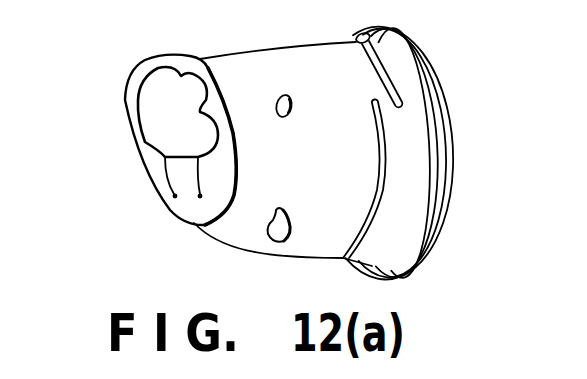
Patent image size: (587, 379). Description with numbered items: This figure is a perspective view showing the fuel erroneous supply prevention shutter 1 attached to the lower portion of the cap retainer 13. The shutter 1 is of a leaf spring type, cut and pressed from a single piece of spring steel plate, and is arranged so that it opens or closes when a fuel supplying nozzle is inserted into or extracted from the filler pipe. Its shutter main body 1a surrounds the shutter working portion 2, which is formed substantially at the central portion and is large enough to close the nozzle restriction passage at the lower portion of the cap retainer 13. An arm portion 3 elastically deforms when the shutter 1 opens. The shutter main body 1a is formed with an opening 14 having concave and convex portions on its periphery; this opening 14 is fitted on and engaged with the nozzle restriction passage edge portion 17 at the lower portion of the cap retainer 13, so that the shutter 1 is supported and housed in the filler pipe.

The fuel erroneous supply prevention shutter 1 is at (110, 65).
The shutter main body 1a is at (155, 176).
The shutter working portion 2 is at (167, 125).
The arm portion 3 is at (182, 183).
The cap retainer 13 is at (262, 58).
The opening 14 is at (199, 60).
The nozzle restriction passage edge portion 17 is at (136, 103).